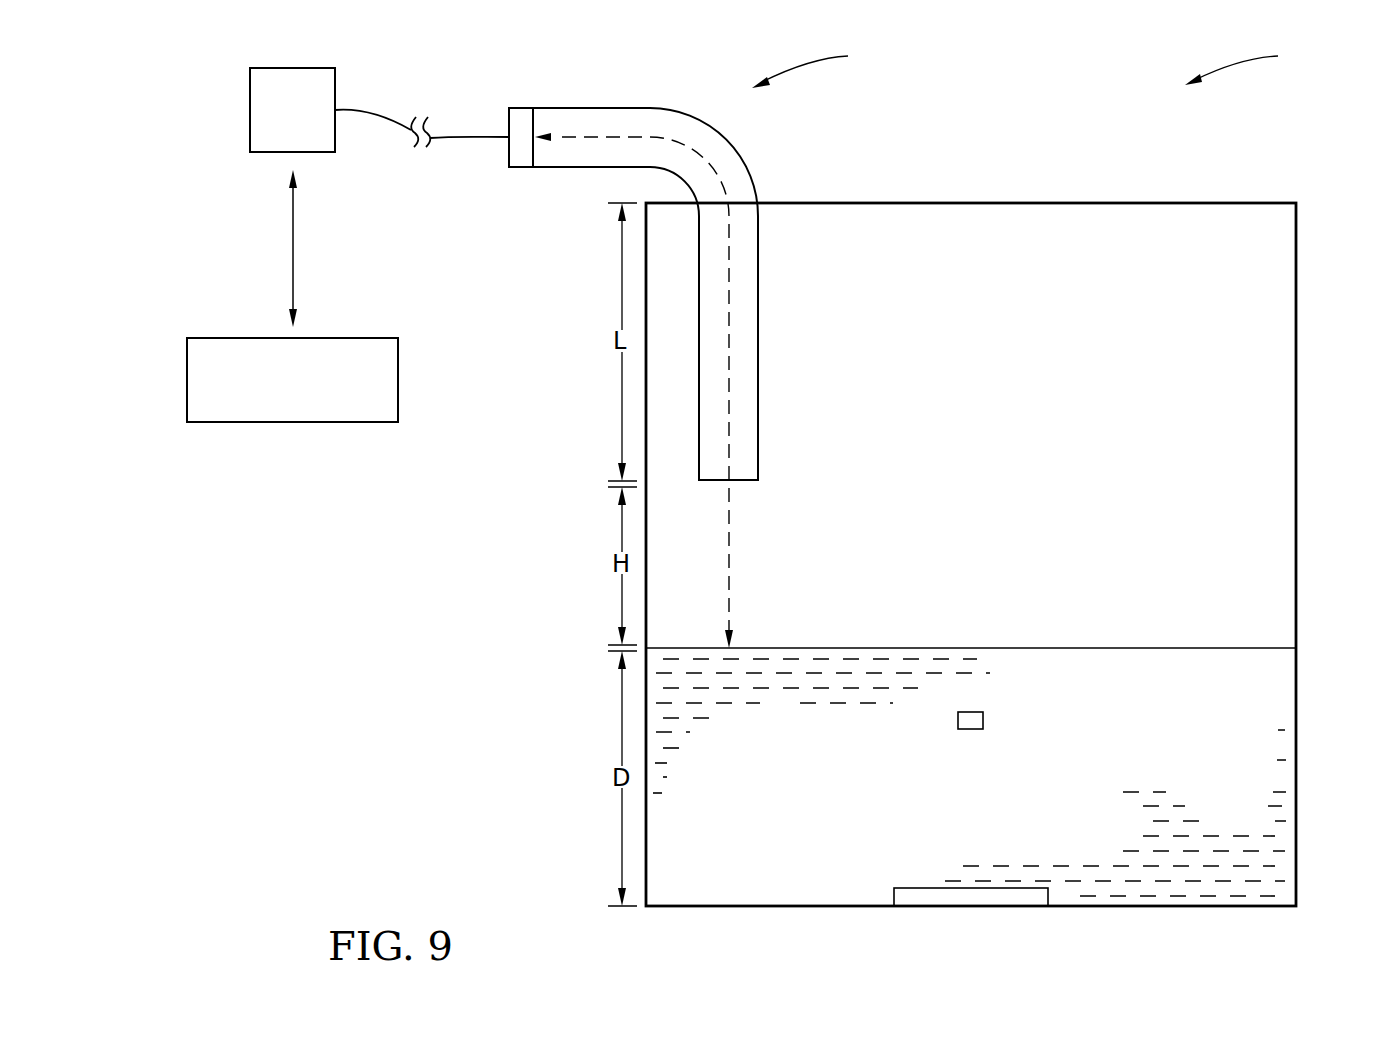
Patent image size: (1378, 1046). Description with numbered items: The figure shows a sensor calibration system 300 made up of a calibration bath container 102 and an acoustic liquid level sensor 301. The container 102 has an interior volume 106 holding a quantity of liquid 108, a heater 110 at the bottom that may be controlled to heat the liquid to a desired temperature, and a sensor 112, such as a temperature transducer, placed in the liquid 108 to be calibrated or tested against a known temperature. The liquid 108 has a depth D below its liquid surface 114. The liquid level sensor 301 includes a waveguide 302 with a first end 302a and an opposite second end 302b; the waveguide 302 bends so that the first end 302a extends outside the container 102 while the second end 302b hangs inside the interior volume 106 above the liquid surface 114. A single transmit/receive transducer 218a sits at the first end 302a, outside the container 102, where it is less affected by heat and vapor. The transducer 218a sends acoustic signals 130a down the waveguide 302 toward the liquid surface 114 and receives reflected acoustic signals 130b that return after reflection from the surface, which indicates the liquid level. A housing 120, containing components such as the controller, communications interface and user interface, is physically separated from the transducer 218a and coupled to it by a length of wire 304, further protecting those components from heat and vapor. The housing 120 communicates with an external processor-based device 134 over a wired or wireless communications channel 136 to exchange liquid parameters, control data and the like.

The calibration bath container 102 is at (1297, 262).
The interior volume 106 is at (1205, 418).
The liquid 108 is at (1245, 718).
The heater 110 is at (1012, 895).
The sensor 112 is at (983, 718).
The liquid surface 114 is at (1235, 647).
The housing 120 is at (250, 110).
The transmitted acoustic signals 130a is at (724, 390).
The reflected acoustic signals 130b is at (730, 580).
The external processor-based device 134 is at (265, 337).
The communications channel 136 is at (293, 250).
The transmit/receive transducer 218a is at (520, 128).
The sensor calibration system 300 is at (1253, 64).
The acoustic liquid level sensor 301 is at (822, 65).
The waveguide 302 is at (730, 147).
The first end of waveguide 302a is at (533, 108).
The second end of waveguide 302b is at (758, 478).
The wire 304 is at (368, 110).